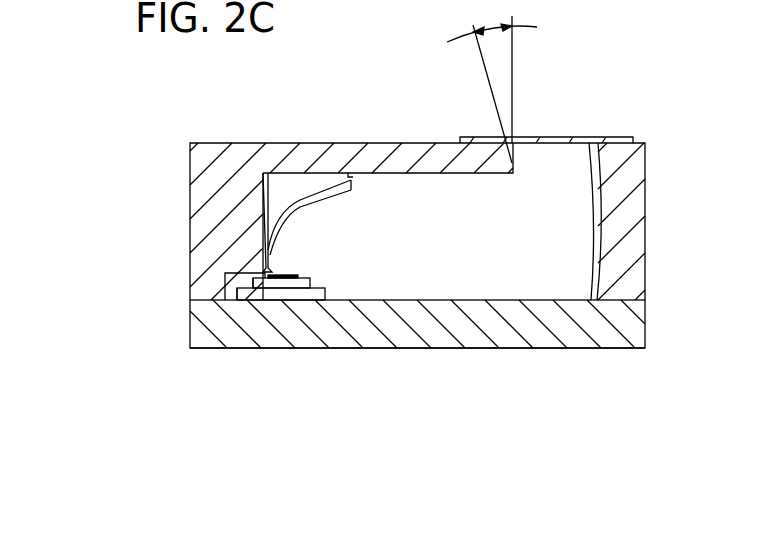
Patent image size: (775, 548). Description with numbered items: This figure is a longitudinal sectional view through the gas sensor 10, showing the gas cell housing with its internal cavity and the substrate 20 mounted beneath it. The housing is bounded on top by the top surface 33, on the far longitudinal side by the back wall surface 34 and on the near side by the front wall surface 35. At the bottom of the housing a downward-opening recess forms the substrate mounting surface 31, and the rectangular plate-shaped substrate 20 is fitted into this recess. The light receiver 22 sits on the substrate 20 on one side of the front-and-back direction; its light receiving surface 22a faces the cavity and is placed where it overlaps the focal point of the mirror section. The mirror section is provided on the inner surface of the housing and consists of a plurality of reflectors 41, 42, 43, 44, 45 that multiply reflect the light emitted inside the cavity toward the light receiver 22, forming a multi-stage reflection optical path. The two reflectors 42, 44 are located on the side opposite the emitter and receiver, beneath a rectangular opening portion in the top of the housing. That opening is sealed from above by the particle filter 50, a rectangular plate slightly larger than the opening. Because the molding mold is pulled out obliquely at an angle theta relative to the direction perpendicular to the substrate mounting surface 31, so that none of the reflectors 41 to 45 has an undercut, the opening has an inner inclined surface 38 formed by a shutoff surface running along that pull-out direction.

The gas sensor 10 is at (616, 112).
The substrate 20 is at (440, 348).
The light receiver 22 is at (327, 297).
The light receiving surface 22a is at (284, 275).
The substrate mounting surface 31 is at (640, 310).
The top surface 33 is at (213, 143).
The back wall surface 34 is at (190, 207).
The front wall surface 35 is at (645, 258).
The inner inclined surface 38 is at (514, 163).
The reflector 41 is at (268, 212).
The reflector 42 is at (594, 209).
The reflector 43 is at (320, 205).
The reflector 44 is at (673, 221).
The reflector 45 is at (294, 161).
The particle filter 50 is at (581, 137).